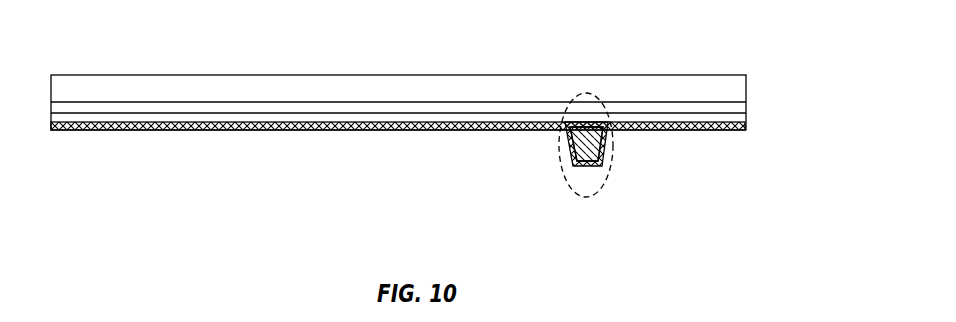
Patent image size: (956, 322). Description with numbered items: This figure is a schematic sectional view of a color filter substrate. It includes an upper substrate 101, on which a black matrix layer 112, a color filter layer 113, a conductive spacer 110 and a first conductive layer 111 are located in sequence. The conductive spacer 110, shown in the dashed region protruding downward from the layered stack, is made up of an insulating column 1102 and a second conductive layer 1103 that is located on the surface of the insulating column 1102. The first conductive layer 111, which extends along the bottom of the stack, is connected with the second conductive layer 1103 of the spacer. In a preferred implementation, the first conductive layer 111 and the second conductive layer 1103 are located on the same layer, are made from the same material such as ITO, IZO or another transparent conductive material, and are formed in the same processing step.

The upper substrate 101 is at (667, 92).
The black matrix layer 112 is at (739, 106).
The color filter layer 113 is at (739, 117).
The first conductive layer 111 is at (739, 131).
The conductive spacer 110 is at (565, 176).
The insulating column 1102 is at (580, 146).
The second conductive layer 1103 is at (605, 153).